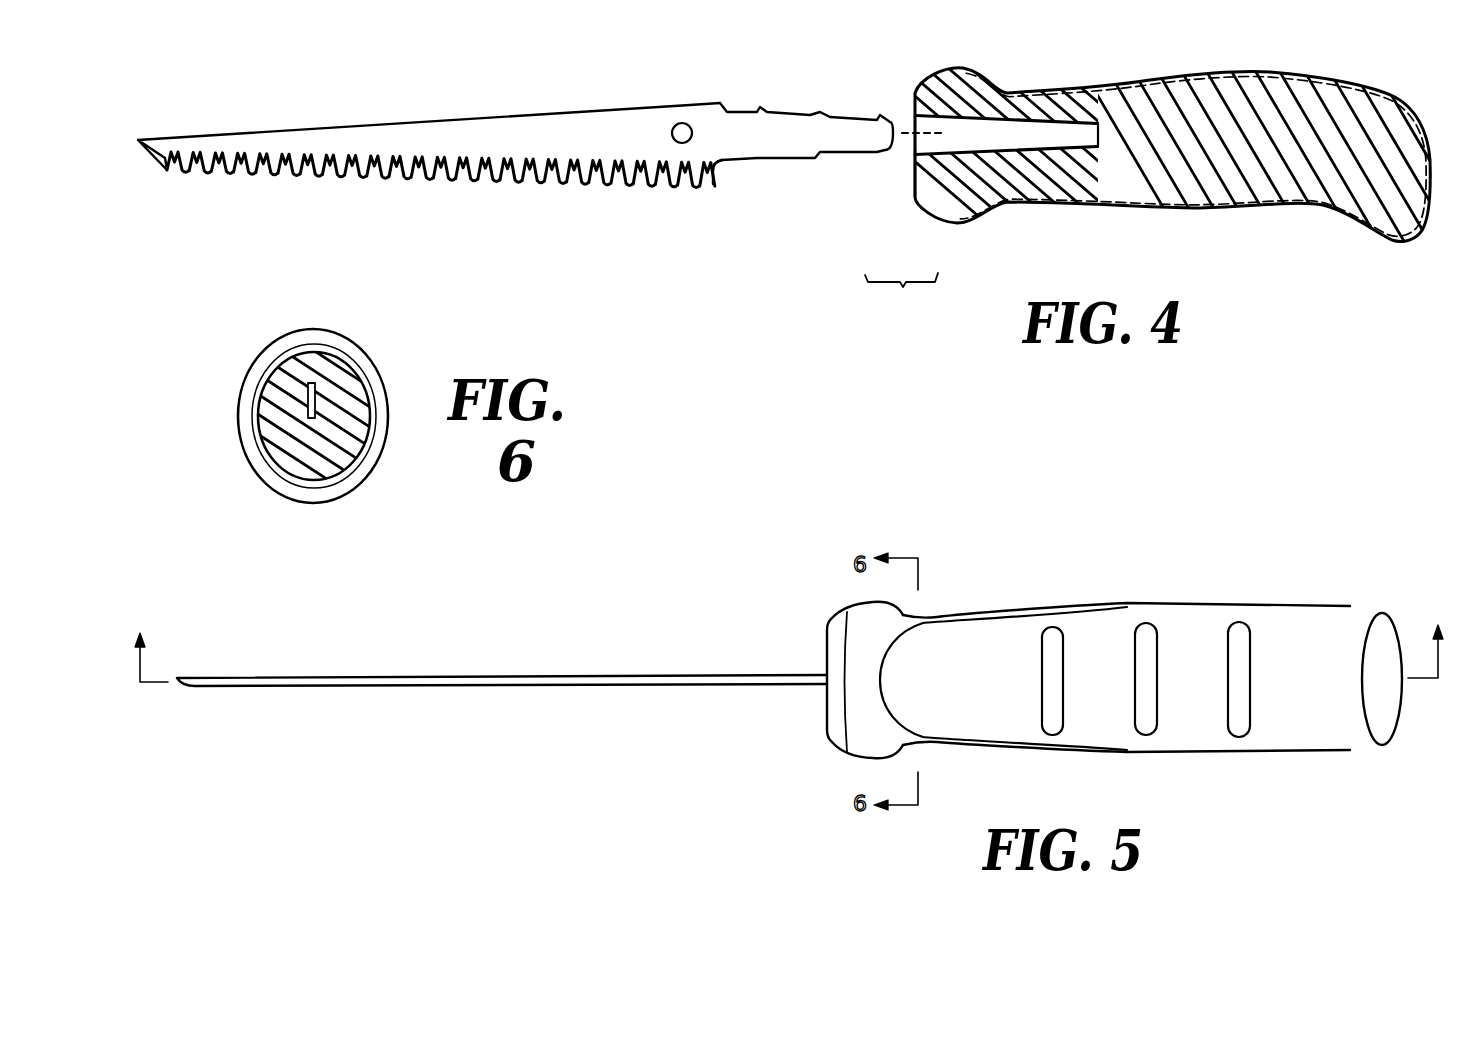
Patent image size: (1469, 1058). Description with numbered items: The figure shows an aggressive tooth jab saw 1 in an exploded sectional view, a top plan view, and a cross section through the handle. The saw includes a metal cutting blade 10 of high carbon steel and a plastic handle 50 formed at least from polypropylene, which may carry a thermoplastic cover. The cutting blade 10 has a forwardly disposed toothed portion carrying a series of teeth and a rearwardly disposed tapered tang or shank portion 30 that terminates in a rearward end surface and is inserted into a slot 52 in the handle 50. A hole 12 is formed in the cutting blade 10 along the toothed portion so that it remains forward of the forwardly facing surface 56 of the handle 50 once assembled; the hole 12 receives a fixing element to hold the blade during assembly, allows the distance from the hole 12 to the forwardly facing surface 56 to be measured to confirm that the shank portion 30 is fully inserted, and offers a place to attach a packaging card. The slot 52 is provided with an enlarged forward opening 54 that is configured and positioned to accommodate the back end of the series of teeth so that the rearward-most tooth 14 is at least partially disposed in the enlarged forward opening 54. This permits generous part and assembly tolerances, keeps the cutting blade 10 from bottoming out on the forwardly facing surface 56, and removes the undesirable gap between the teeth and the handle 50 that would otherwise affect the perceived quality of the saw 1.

In FIG. 5, the aggressive tooth jab saw 1 is at (927, 524).
In FIG. 4, the cutting blade 10 is at (510, 106).
In FIG. 6, the cutting blade 10 is at (313, 398).
In FIG. 5, the cutting blade 10 is at (484, 663).
In FIG. 4, the hole 12 is at (687, 123).
In FIG. 4, the rearward-most tooth 14 is at (722, 174).
In FIG. 4, the shank portion 30 is at (803, 110).
In FIG. 4, the handle 50 is at (1266, 64).
In FIG. 6, the handle 50 is at (372, 360).
In FIG. 5, the handle 50 is at (1197, 570).
In FIG. 4, the slot 52 is at (945, 140).
In FIG. 4, the enlarged forward opening 54 is at (915, 187).
In FIG. 5, the forwardly facing surface 56 is at (828, 716).